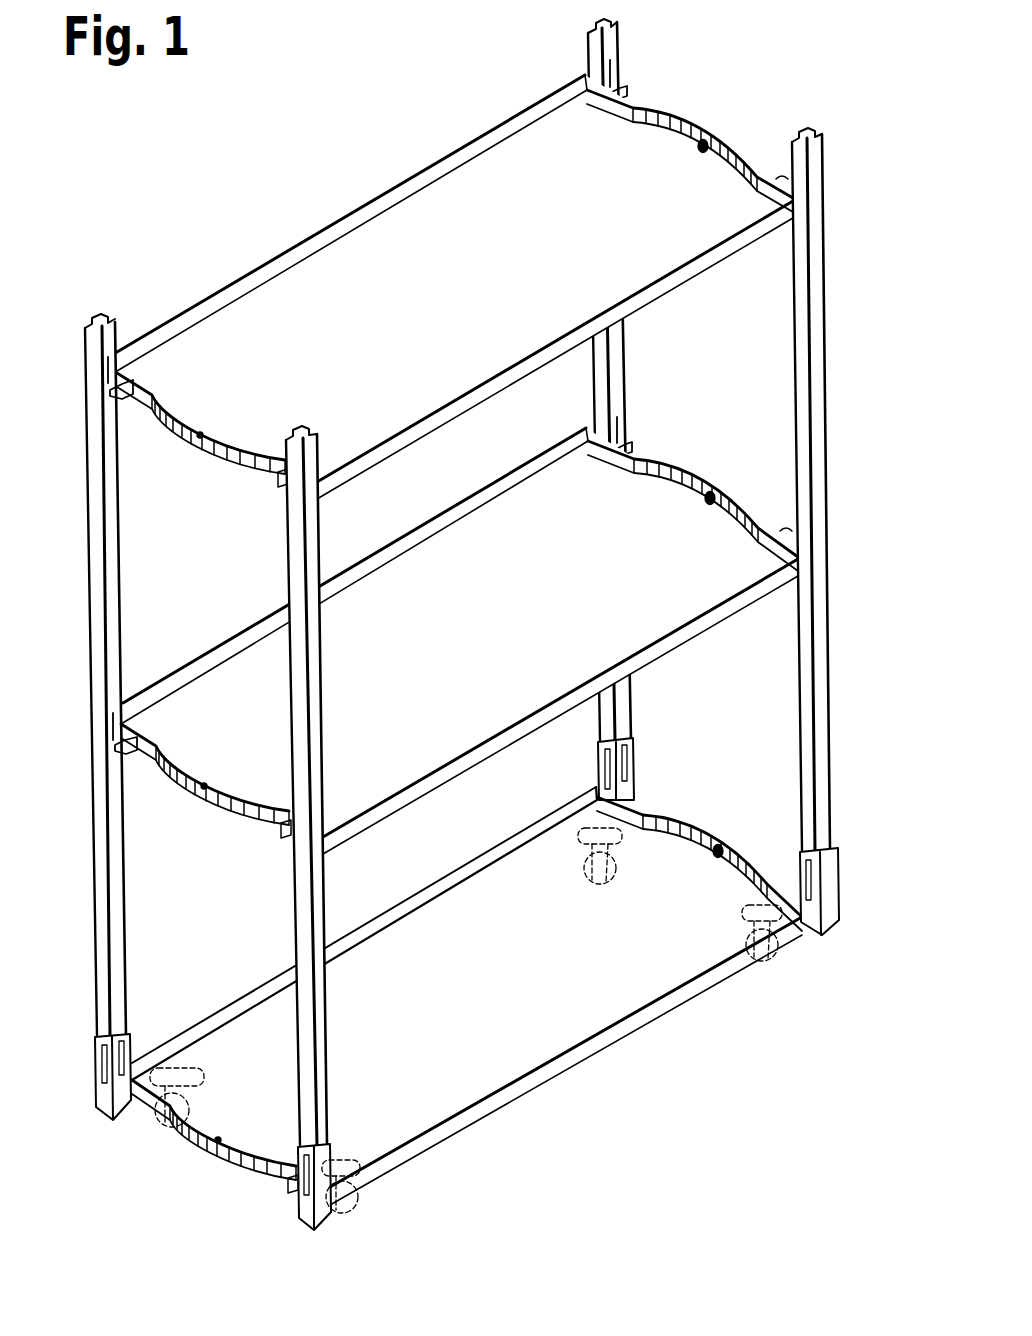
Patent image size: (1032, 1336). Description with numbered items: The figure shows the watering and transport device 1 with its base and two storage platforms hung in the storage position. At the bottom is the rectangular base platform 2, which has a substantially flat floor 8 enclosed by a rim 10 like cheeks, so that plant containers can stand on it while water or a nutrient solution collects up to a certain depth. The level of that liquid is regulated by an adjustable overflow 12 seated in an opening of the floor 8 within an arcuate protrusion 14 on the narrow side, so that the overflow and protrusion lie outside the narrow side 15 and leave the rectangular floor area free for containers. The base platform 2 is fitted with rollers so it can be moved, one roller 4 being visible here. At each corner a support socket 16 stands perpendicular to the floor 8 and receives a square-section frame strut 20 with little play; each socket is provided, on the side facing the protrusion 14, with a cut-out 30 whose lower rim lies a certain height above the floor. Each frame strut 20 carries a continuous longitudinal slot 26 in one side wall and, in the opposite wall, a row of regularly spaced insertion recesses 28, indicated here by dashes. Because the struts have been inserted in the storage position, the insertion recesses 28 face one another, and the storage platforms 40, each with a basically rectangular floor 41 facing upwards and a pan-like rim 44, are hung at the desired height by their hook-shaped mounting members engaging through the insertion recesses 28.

The device 1 is at (214, 230).
The base platform 2 is at (618, 1066).
The roller 4 is at (645, 840).
The floor 8 is at (517, 1067).
The rim 10 is at (487, 1110).
The adjustable overflow 12 is at (718, 876).
The arcuate protrusion 14 is at (760, 857).
The narrow side 15 is at (188, 1168).
The support socket 16 is at (829, 882).
The frame strut 20 is at (827, 447).
The longitudinal slot 26 is at (818, 176).
The insertion recess 28 is at (621, 72).
The cut-out 30 is at (630, 748).
The storage platform 40 is at (758, 475).
The floor 41 is at (490, 290).
The rim 44 is at (398, 183).